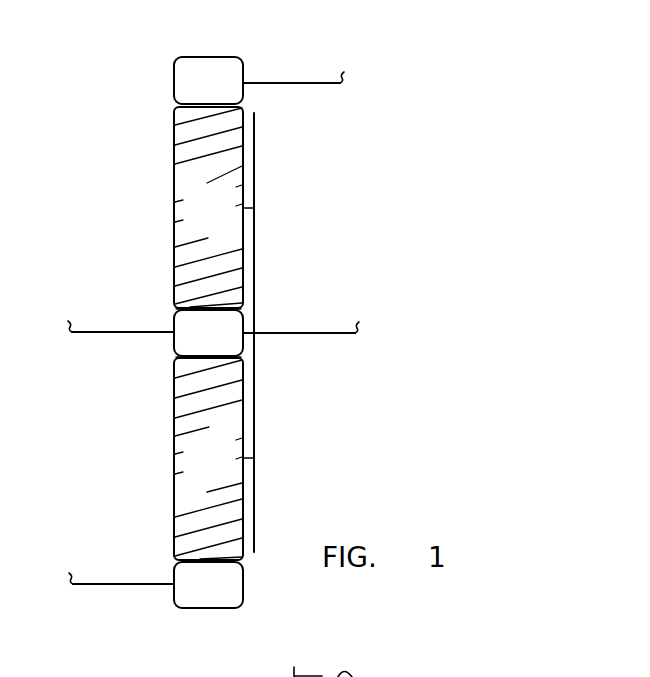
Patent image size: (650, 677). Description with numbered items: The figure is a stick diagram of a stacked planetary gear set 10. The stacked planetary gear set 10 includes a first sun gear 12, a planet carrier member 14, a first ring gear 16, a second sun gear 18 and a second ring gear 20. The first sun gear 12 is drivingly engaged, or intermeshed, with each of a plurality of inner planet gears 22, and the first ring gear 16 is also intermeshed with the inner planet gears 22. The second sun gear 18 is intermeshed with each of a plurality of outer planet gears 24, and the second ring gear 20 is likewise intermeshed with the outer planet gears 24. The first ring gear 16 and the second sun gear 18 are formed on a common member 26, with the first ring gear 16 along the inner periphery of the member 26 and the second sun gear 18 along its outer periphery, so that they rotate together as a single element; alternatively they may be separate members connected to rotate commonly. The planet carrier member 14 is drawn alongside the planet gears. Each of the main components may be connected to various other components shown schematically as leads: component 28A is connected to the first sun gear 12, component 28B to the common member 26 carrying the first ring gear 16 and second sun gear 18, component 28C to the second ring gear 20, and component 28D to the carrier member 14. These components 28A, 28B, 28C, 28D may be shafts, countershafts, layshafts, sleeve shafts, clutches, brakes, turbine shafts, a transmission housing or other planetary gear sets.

The stacked planetary gear set 10 is at (438, 98).
The first sun gear 12 is at (222, 601).
The planet carrier member 14 is at (256, 241).
The first ring gear 16 is at (213, 359).
The second sun gear 18 is at (204, 309).
The second ring gear 20 is at (222, 97).
The inner planet gears 22 is at (222, 474).
The outer planet gears 24 is at (222, 224).
The common member 26 is at (222, 349).
The other component 28A is at (102, 582).
The other component 28B is at (92, 336).
The other component 28C is at (312, 82).
The other component 28D is at (310, 331).